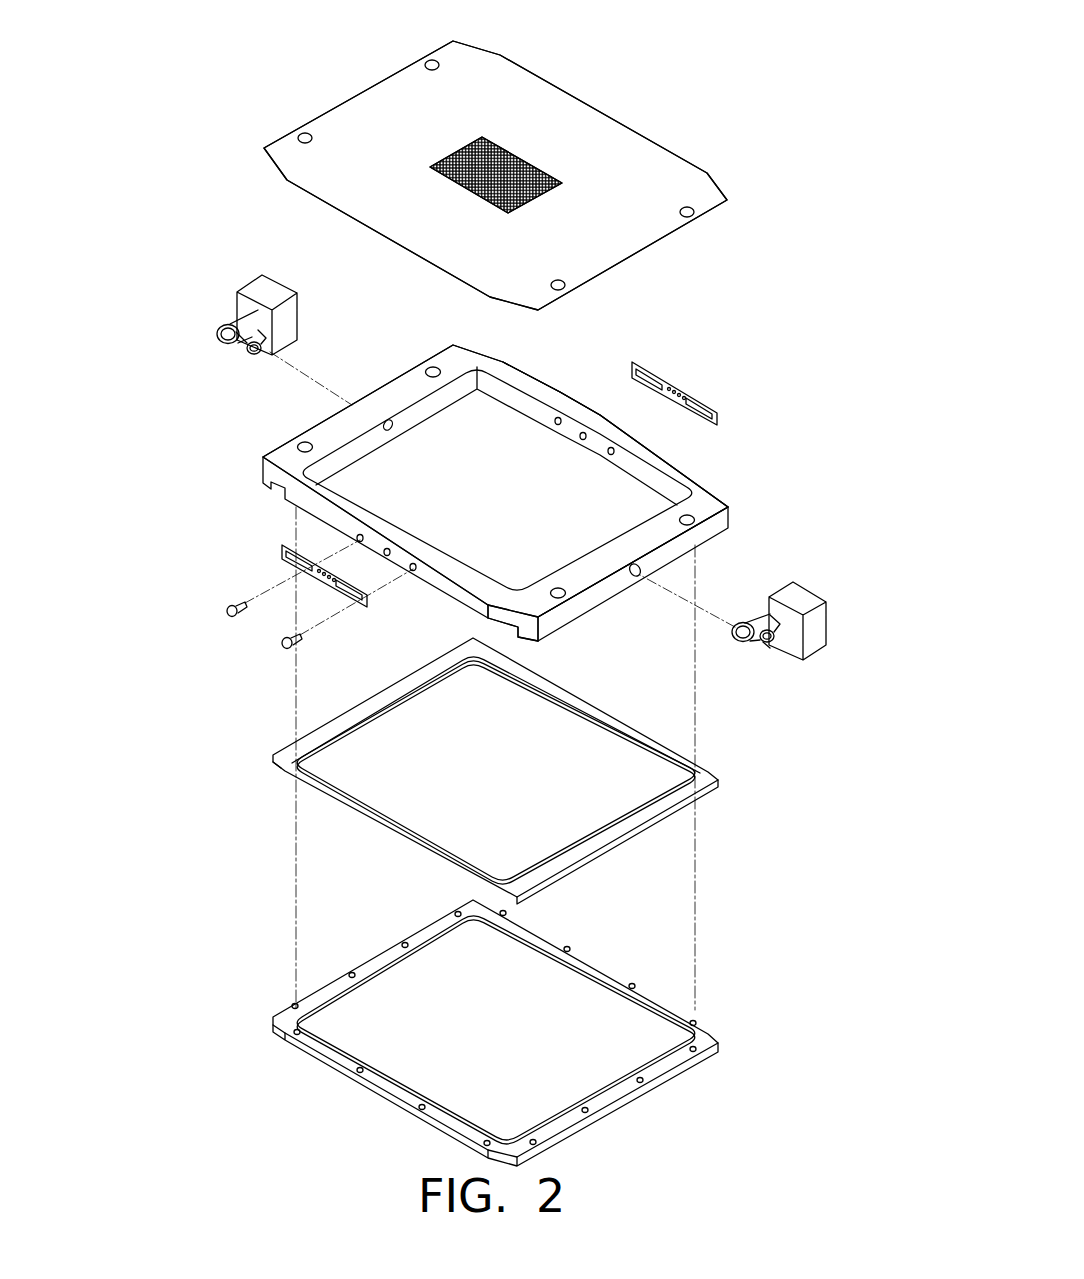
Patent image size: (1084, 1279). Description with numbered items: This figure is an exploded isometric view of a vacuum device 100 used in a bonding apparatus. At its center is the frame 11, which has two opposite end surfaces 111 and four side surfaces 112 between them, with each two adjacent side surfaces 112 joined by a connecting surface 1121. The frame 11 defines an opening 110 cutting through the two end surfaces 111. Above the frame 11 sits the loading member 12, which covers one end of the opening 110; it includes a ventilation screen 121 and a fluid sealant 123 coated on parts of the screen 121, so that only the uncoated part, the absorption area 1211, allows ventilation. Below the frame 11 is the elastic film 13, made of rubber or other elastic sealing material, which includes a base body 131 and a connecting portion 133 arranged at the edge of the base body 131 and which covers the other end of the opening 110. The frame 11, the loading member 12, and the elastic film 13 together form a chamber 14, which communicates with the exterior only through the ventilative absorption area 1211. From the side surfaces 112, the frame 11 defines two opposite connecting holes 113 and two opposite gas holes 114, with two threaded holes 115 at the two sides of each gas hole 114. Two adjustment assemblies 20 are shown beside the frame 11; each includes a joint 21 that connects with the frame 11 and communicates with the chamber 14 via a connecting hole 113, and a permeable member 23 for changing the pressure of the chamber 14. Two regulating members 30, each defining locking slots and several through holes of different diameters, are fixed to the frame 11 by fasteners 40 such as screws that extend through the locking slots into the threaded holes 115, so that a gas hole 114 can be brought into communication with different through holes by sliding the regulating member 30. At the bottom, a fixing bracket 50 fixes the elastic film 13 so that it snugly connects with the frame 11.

The vacuum device 100 is at (568, 46).
The frame 11 is at (581, 381).
The loading member 12 is at (286, 206).
The elastic film 13 is at (786, 757).
The chamber 14 is at (470, 413).
The adjustment assembly 20 is at (790, 703).
The joint 21 is at (780, 638).
The permeable member 23 is at (815, 630).
The regulating member 30 is at (678, 385).
The fastener 40 is at (233, 604).
The fixing bracket 50 is at (708, 1045).
The opening 110 is at (373, 473).
The end surface 111 is at (705, 485).
The side surface 112 is at (453, 588).
The connecting hole 113 is at (636, 576).
The gas hole 114 is at (387, 550).
The threaded hole 115 is at (413, 565).
The ventilation screen 121 is at (512, 162).
The absorption area 1211 is at (552, 177).
The fluid sealant 123 is at (638, 173).
The base body 131 is at (638, 785).
The connecting portion 133 is at (707, 775).
The connecting surface 1121 is at (540, 641).